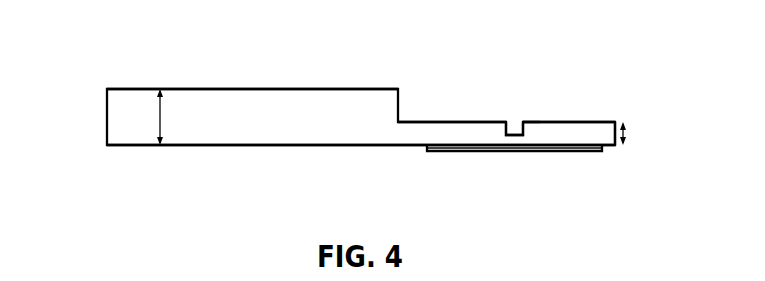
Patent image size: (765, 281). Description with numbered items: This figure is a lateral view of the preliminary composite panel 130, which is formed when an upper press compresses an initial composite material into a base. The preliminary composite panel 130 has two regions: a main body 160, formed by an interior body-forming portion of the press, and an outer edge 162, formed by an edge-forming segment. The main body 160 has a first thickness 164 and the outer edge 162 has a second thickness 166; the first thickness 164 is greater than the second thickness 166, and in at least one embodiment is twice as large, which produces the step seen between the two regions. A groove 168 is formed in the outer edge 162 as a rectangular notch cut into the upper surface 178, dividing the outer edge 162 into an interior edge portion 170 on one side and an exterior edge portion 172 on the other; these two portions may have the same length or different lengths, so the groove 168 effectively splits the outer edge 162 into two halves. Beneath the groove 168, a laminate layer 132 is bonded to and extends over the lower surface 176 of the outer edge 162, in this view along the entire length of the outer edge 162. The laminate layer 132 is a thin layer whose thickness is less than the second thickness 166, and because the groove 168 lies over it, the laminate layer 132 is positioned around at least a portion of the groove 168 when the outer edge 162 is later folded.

The preliminary composite panel 130 is at (121, 65).
The laminate layer 132 is at (528, 151).
The main body 160 is at (207, 87).
The outer edge 162 is at (606, 112).
The first thickness 164 is at (163, 118).
The second thickness 166 is at (627, 133).
The groove 168 is at (513, 132).
The interior edge portion 170 is at (452, 121).
The exterior edge portion 172 is at (553, 121).
The lower surface 176 is at (425, 140).
The upper surface 178 is at (531, 121).